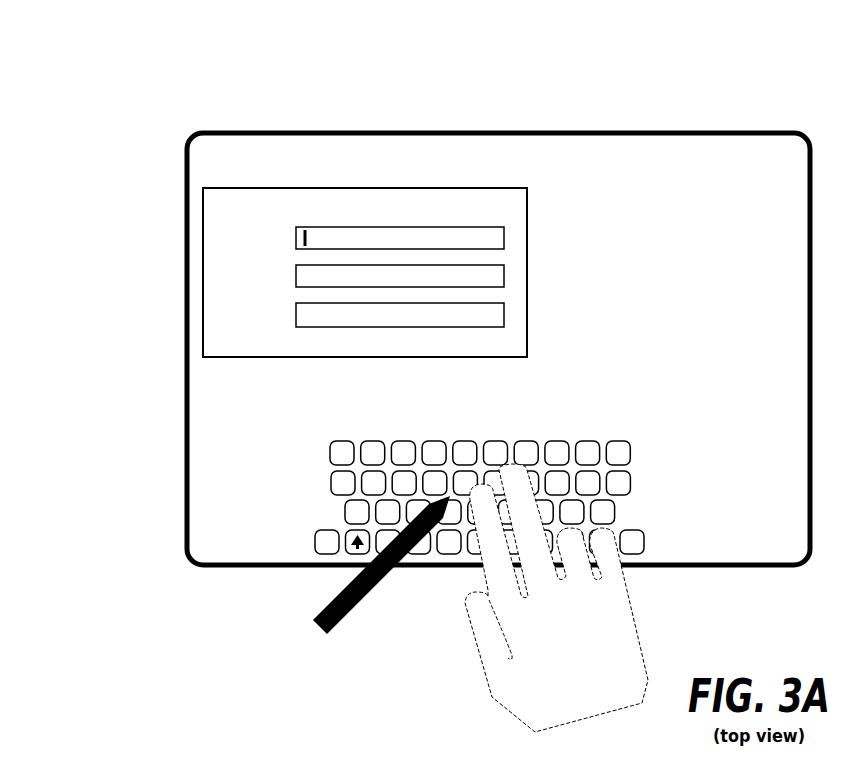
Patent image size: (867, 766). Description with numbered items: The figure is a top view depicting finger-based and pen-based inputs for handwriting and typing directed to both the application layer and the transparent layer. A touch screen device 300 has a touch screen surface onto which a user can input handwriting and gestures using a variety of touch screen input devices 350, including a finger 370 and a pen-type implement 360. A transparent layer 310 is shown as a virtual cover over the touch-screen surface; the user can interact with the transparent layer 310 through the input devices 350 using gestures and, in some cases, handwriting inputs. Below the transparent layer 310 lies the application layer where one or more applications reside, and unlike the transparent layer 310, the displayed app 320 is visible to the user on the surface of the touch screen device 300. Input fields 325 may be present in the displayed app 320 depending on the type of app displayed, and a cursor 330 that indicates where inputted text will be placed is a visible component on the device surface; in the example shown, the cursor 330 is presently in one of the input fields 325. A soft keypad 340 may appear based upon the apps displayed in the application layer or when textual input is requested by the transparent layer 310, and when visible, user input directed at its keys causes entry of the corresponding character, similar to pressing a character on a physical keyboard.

The touch screen device 300 is at (513, 125).
The transparent layer 310 is at (628, 165).
The displayed app 320 is at (229, 188).
The input fields 325 is at (296, 315).
The cursor 330 is at (306, 228).
The soft keypad 340 is at (303, 455).
The touch screen input devices 350 is at (478, 655).
The pen-type implement 360 is at (318, 619).
The finger 370 is at (580, 678).